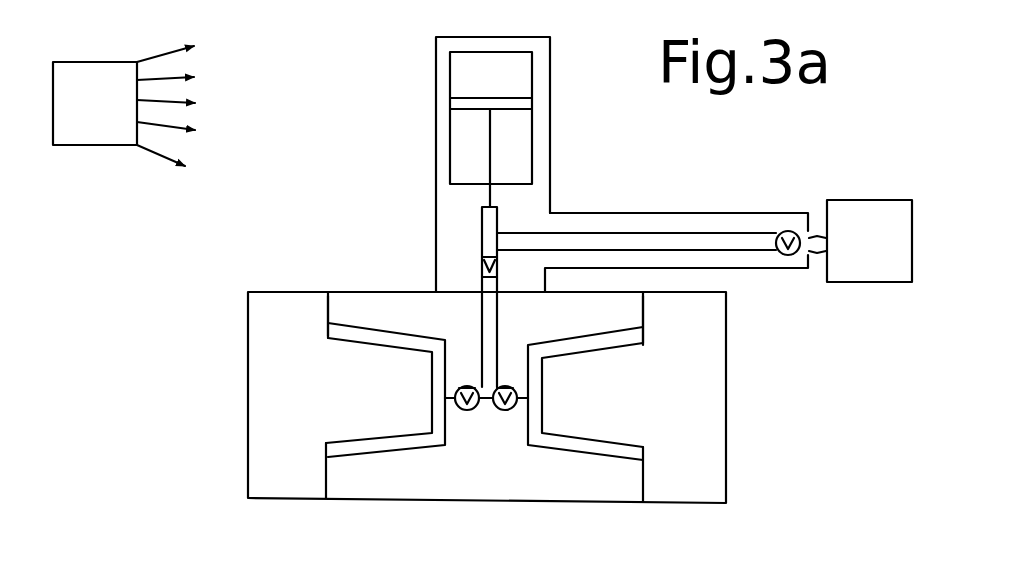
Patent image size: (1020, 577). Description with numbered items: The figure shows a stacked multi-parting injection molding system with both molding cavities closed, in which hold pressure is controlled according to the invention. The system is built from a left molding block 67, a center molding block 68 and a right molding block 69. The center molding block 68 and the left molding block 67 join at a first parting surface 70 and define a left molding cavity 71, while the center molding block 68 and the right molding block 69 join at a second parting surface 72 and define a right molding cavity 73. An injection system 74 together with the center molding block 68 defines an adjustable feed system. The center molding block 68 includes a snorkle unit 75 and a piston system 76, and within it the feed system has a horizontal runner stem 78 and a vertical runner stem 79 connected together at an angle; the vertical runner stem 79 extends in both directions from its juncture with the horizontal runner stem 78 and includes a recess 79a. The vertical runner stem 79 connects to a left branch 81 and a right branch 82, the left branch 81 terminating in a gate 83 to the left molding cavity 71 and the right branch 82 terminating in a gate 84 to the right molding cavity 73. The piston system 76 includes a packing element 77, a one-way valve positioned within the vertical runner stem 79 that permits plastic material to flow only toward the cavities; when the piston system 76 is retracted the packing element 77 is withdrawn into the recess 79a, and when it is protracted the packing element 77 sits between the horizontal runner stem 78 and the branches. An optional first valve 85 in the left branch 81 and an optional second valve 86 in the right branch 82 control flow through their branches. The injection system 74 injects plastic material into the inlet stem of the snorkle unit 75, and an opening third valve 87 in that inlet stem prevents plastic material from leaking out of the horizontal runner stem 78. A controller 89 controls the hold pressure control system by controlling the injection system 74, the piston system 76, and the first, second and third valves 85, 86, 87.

The controller 89 is at (86, 70).
The injection system 74 is at (862, 200).
The piston system 76 is at (535, 105).
The first valve 85 is at (470, 387).
The second valve 86 is at (512, 387).
The third valve 87 is at (790, 257).
The snorkle unit 75 is at (610, 215).
The horizontal runner stem 78 is at (683, 240).
The recess 79a is at (482, 225).
The packing element 77 is at (482, 268).
The vertical runner stem 79 is at (480, 312).
The first parting surface 70 is at (328, 310).
The left molding cavity 71 is at (390, 338).
The right molding cavity 73 is at (578, 348).
The second parting surface 72 is at (648, 313).
The left molding block 67 is at (290, 498).
The center molding block 68 is at (483, 498).
The right molding block 69 is at (688, 503).
The left branch 81 is at (453, 408).
The right branch 82 is at (520, 412).
The gate 83 is at (453, 397).
The gate 84 is at (522, 400).